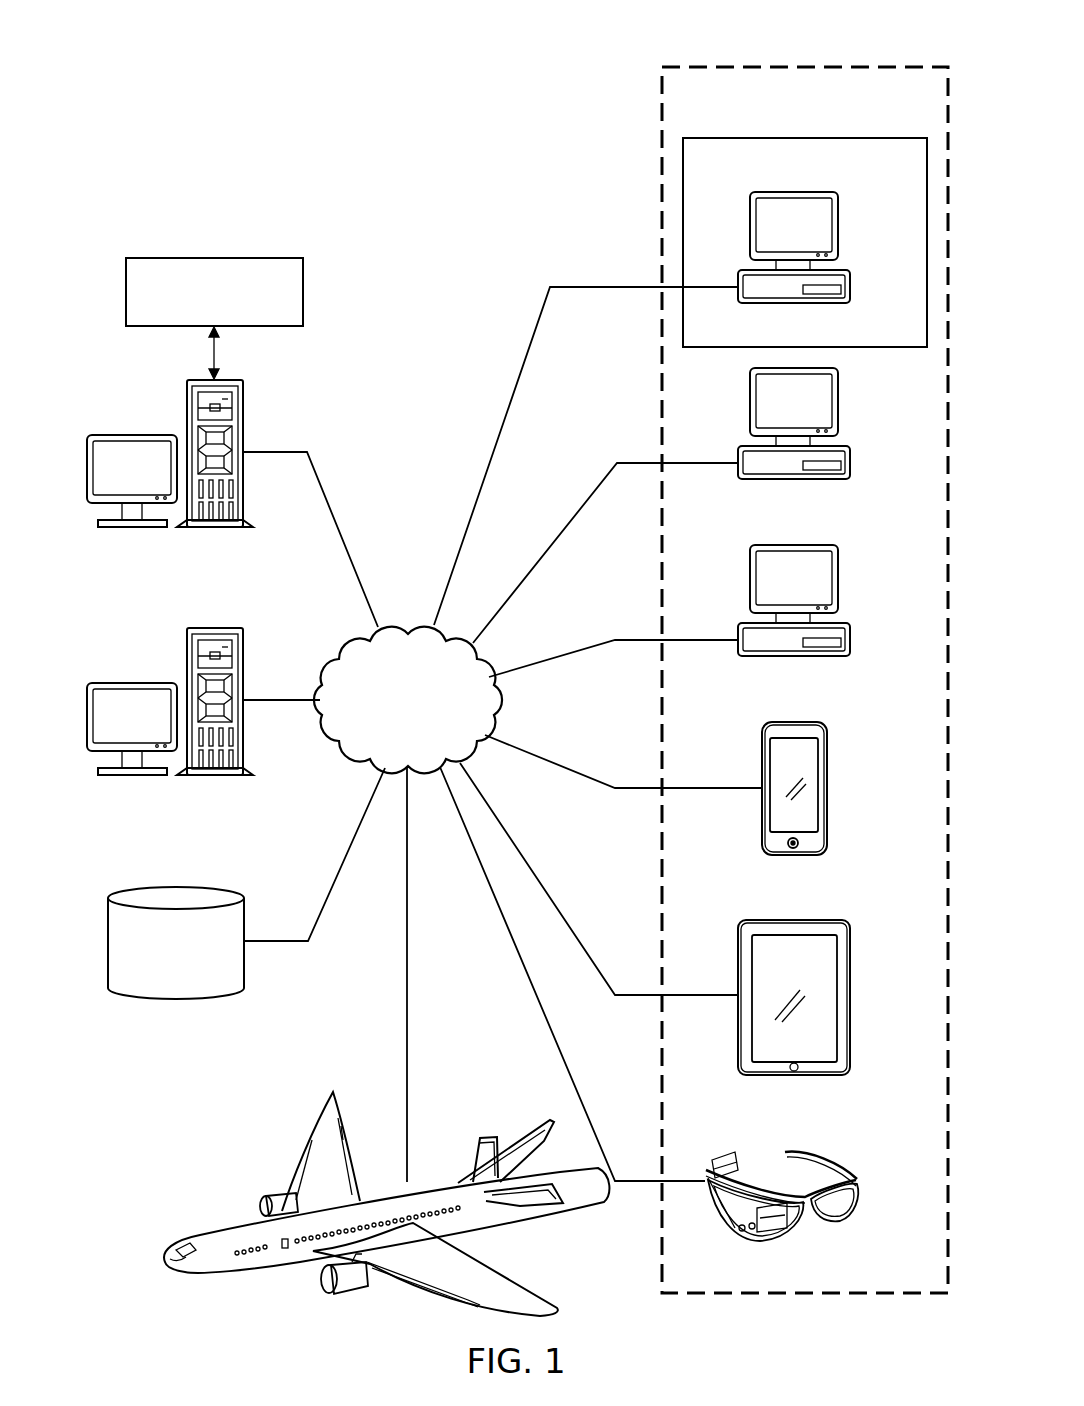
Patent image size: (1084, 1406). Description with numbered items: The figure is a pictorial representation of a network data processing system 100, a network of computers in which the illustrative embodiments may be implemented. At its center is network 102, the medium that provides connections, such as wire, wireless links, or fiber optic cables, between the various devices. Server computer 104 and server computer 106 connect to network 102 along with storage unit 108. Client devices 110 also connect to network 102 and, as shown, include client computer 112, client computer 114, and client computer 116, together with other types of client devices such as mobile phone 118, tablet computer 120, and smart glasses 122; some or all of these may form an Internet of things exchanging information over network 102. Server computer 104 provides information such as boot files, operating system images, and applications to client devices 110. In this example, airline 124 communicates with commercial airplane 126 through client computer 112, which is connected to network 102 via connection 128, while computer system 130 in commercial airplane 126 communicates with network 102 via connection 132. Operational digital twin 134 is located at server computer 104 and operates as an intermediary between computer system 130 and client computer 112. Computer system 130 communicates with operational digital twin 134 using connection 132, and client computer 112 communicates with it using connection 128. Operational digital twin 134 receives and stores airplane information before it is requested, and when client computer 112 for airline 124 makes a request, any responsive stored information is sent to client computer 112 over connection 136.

The network data processing system 100 is at (226, 110).
The network 102 is at (429, 732).
The server computer 104 is at (132, 435).
The server computer 106 is at (132, 683).
The storage unit 108 is at (176, 999).
The client devices 110 is at (858, 58).
The client computer 112 is at (840, 226).
The client computer 114 is at (840, 403).
The client computer 116 is at (840, 580).
The mobile phone 118 is at (827, 800).
The tablet computer 120 is at (850, 1010).
The smart glasses 122 is at (858, 1198).
The airline 124 is at (884, 138).
The commercial airplane 126 is at (368, 1205).
The connection 128 is at (605, 287).
The computer system 130 is at (175, 1246).
The connection 132 is at (407, 1020).
The operational digital twin 134 is at (126, 290).
The connection 136 is at (347, 542).